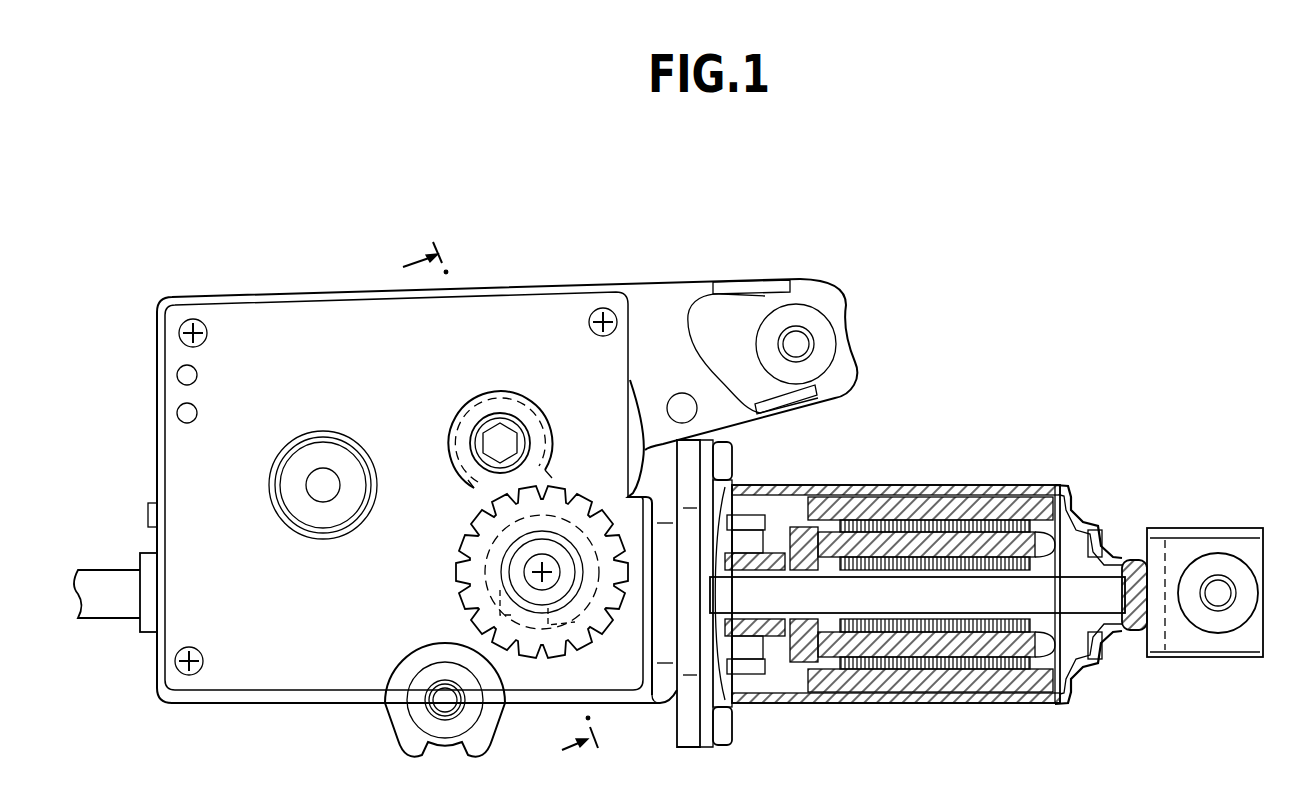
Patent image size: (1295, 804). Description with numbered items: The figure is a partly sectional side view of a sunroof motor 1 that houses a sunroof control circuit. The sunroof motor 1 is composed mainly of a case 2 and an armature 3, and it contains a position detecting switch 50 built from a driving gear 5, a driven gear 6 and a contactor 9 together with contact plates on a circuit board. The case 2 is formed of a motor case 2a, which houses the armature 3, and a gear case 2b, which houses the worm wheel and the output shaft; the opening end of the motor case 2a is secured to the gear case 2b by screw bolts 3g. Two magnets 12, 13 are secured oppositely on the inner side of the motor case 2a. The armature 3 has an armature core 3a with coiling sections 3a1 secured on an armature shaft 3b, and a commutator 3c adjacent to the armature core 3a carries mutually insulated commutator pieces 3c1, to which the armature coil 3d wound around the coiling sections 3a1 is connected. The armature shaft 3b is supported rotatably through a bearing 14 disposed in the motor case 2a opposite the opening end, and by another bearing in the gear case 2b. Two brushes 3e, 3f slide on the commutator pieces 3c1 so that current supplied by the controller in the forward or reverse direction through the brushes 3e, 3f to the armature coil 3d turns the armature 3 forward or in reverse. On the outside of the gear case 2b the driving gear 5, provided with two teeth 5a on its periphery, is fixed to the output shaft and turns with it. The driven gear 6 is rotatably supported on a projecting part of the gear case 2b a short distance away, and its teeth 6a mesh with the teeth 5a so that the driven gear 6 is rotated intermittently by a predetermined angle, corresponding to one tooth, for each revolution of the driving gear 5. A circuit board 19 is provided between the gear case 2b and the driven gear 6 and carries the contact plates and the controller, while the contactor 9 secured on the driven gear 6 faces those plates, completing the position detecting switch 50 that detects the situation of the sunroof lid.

The sunroof motor 1 is at (693, 173).
The case 2 is at (844, 458).
The motor case 2a is at (1053, 488).
The gear case 2b is at (641, 282).
The armature 3 is at (935, 597).
The armature core 3a is at (920, 673).
The coiling sections 3a1 is at (1000, 630).
The armature shaft 3b is at (912, 585).
The commutator 3c is at (790, 625).
The commutator pieces 3c1 is at (812, 538).
The armature coil 3d is at (1083, 660).
The brush 3e is at (766, 518).
The brush 3f is at (750, 652).
The screw bolts 3g is at (735, 456).
The driving gear 5 is at (406, 494).
The teeth of driving gear 5a is at (528, 482).
The position detecting switch 50 is at (552, 470).
The driven gear 6 is at (470, 624).
The teeth of driven gear 6a is at (478, 530).
The contactor 9 is at (583, 620).
The magnet 12 is at (1071, 506).
The magnet 13 is at (1058, 692).
The bearing 14 is at (1126, 560).
The circuit board 19 is at (272, 313).